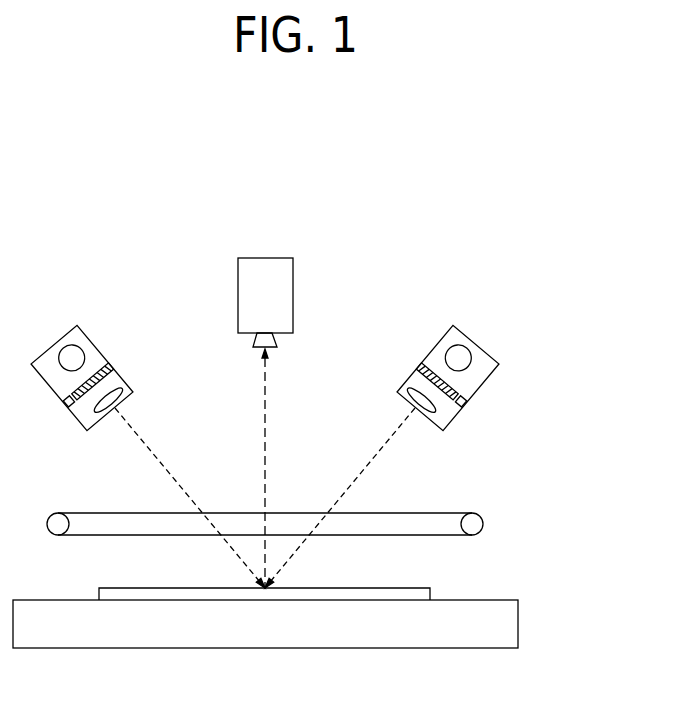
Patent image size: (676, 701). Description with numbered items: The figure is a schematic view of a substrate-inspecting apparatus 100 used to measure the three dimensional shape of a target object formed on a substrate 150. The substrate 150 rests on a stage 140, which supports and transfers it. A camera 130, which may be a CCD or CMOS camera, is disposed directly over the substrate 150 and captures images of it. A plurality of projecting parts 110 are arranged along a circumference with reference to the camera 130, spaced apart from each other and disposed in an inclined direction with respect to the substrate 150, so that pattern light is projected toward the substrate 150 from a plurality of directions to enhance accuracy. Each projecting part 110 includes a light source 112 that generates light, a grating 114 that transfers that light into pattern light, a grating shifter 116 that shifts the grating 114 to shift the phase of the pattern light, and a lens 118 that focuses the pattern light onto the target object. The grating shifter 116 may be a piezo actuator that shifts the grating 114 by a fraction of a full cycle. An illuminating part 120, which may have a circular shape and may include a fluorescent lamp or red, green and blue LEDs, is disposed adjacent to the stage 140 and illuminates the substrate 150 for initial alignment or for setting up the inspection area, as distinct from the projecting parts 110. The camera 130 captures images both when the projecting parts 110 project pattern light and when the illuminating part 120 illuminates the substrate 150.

The substrate-inspecting apparatus 100 is at (522, 183).
The projecting part 110 is at (423, 413).
The light source 112 is at (462, 352).
The grating 114 is at (417, 368).
The grating shifter 116 is at (463, 402).
The lens 118 is at (403, 403).
The illuminating part 120 is at (477, 522).
The camera 130 is at (264, 265).
The stage 140 is at (510, 623).
The substrate 150 is at (432, 587).